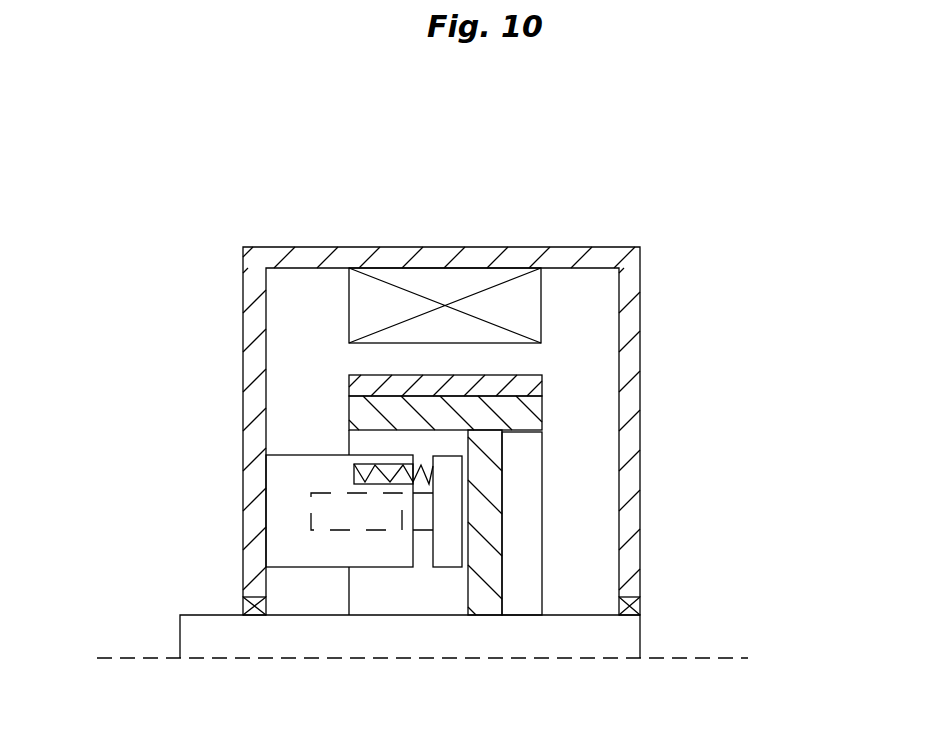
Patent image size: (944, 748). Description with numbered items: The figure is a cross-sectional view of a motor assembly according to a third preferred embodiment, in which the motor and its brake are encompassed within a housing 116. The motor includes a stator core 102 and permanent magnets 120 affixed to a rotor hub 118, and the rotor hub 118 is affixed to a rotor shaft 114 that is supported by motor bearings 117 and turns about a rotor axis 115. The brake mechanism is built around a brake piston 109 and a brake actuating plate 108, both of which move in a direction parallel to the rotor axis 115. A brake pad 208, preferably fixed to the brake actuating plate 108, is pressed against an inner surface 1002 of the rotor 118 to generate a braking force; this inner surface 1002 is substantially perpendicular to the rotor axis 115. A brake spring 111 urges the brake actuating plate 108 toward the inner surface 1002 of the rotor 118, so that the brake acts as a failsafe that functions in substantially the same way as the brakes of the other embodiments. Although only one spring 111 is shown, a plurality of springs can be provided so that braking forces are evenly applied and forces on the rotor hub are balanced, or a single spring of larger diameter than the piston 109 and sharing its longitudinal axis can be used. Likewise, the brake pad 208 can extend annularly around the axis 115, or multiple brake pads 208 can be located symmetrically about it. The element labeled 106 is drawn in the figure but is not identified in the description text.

The stator core 102 is at (449, 285).
The actuator housing 106 is at (282, 517).
The brake actuating plate 108 is at (448, 502).
The brake piston 109 is at (422, 518).
The brake spring 111 is at (353, 477).
The rotor shaft 114 is at (625, 637).
The rotor axis 115 is at (668, 658).
The housing 116 is at (632, 357).
The motor bearings 117 is at (240, 607).
The rotor hub 118 is at (523, 421).
The permanent magnets 120 is at (524, 385).
The brake pad 208 is at (463, 477).
The inner surface 1002 is at (468, 460).